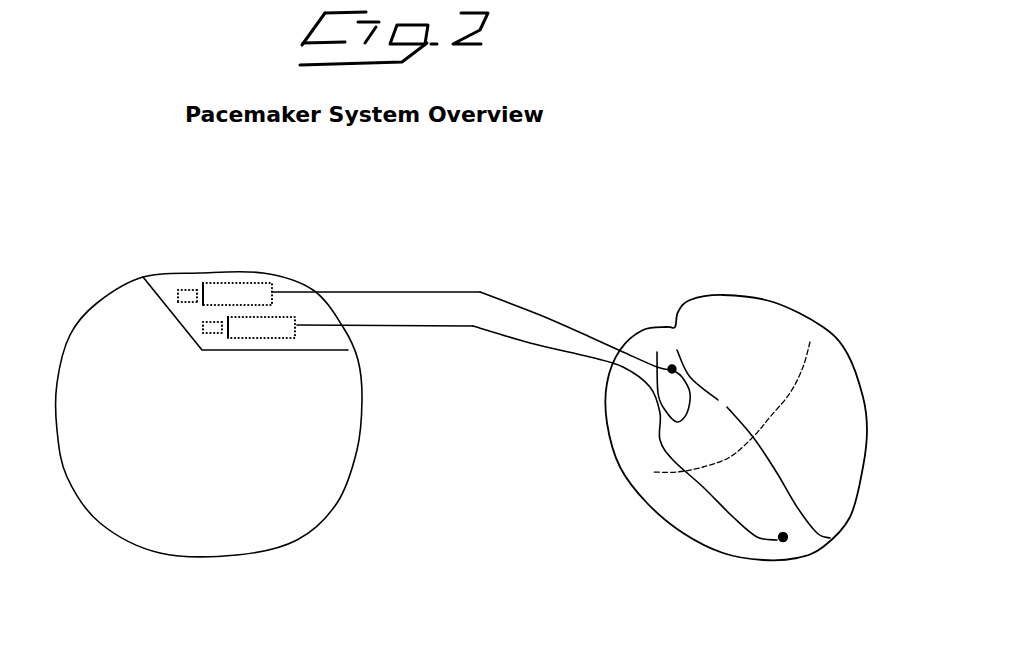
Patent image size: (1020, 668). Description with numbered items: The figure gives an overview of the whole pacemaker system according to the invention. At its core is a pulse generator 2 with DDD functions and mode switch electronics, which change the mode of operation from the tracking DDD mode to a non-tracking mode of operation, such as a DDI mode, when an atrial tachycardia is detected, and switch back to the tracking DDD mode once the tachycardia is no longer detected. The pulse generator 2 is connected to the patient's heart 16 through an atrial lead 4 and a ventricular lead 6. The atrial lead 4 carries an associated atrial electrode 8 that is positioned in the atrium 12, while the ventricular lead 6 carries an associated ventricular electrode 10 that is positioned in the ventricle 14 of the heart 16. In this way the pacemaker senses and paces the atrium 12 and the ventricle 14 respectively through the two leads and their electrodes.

The pulse generator 2 is at (92, 332).
The atrial lead 4 is at (525, 310).
The ventricular lead 6 is at (553, 352).
The atrial electrode 8 is at (670, 366).
The ventricular electrode 10 is at (787, 540).
The atrium 12 is at (612, 448).
The ventricle 14 is at (710, 517).
The heart 16 is at (845, 352).